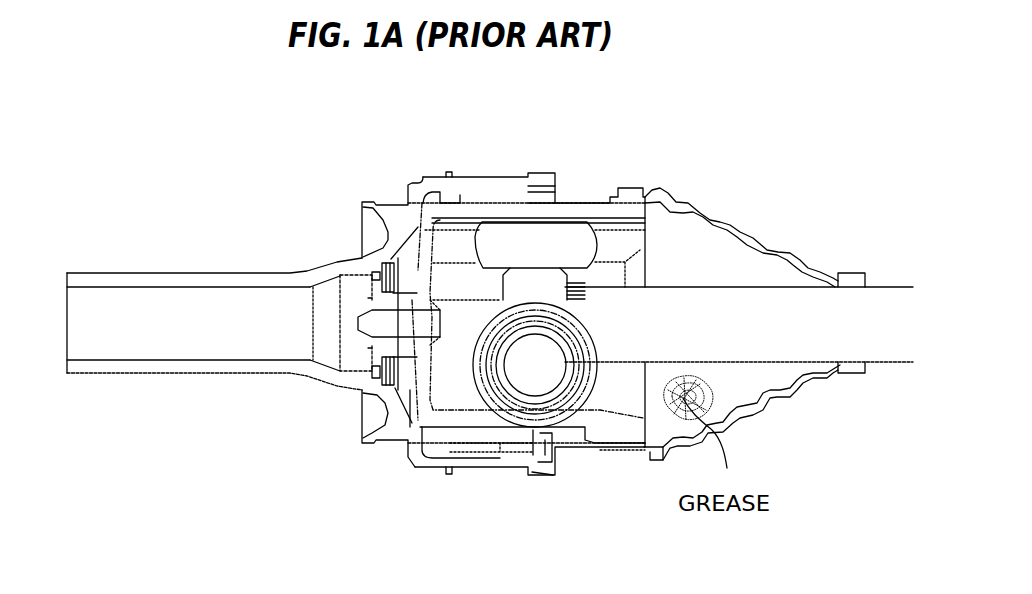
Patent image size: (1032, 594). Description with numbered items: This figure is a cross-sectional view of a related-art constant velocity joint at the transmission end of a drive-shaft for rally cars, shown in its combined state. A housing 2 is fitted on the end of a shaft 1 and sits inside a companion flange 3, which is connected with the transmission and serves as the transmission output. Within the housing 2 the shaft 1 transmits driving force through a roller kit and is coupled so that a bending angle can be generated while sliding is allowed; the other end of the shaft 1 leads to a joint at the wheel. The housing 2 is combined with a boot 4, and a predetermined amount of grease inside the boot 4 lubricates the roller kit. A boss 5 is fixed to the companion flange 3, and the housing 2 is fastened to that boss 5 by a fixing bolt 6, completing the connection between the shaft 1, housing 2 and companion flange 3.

The shaft 1 is at (768, 305).
The housing 2 is at (565, 212).
The companion flange 3 is at (402, 232).
The boot 4 is at (708, 205).
The boss 5 is at (384, 372).
The fixing bolt 6 is at (388, 378).